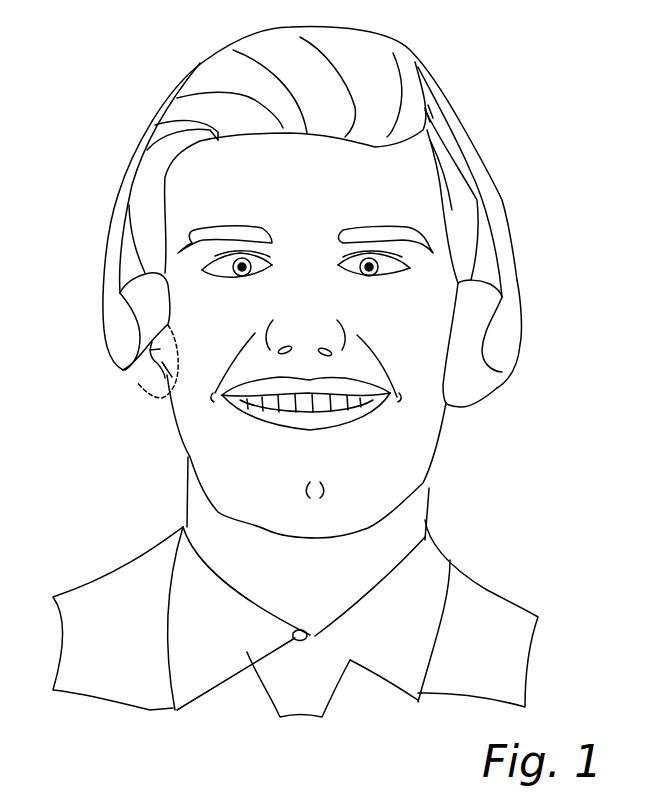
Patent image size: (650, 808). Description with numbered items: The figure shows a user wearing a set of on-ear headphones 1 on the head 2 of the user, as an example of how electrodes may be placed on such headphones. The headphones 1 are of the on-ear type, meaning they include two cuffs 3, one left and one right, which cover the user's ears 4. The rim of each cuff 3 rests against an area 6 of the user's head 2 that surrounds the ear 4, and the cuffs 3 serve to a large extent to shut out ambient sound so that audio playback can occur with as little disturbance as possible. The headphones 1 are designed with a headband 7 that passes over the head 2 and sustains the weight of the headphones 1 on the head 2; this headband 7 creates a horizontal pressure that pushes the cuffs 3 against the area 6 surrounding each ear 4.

The on-ear headphones 1 is at (507, 283).
The head 2 is at (338, 167).
The cuff 3 is at (470, 384).
The ear 4 is at (157, 350).
The area of the user's head surrounding the ear 6 is at (166, 373).
The headband 7 is at (487, 172).